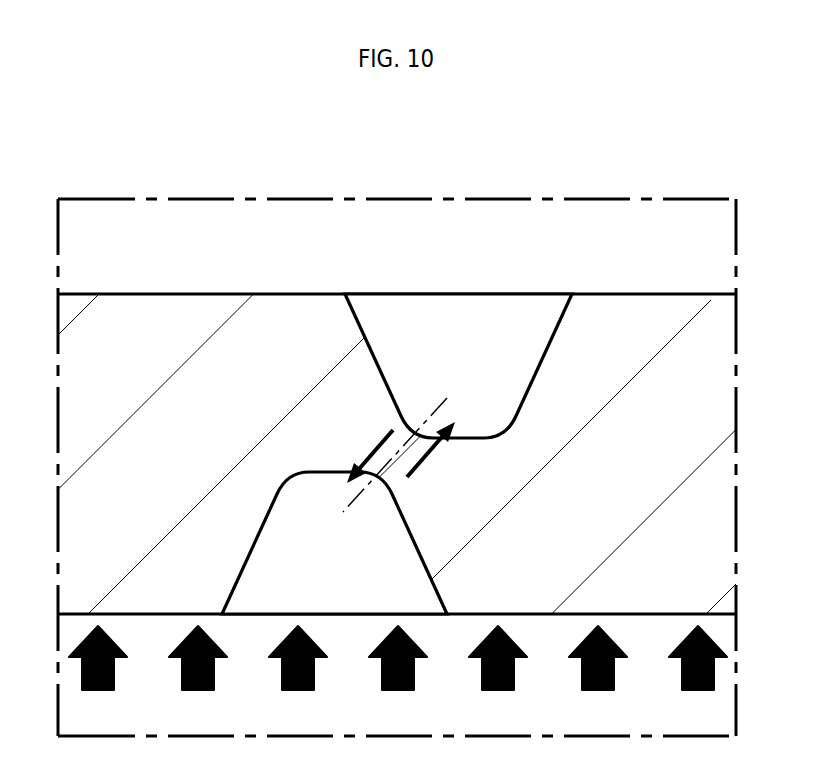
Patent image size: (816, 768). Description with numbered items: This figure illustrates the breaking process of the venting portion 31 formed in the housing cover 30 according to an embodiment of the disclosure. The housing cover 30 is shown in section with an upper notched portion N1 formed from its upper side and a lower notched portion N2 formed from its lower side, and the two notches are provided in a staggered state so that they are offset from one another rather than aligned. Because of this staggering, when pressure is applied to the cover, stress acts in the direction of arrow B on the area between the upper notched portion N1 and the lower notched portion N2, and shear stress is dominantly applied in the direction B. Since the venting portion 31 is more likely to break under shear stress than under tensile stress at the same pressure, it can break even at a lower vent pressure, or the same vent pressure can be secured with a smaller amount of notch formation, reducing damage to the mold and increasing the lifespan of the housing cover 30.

The housing cover 30 is at (126, 176).
The venting portion 31 is at (560, 221).
The upper notched portion N1 is at (546, 350).
The lower notched portion N2 is at (420, 553).
The direction of arrow B is at (399, 455).
The pressure direction P is at (398, 678).